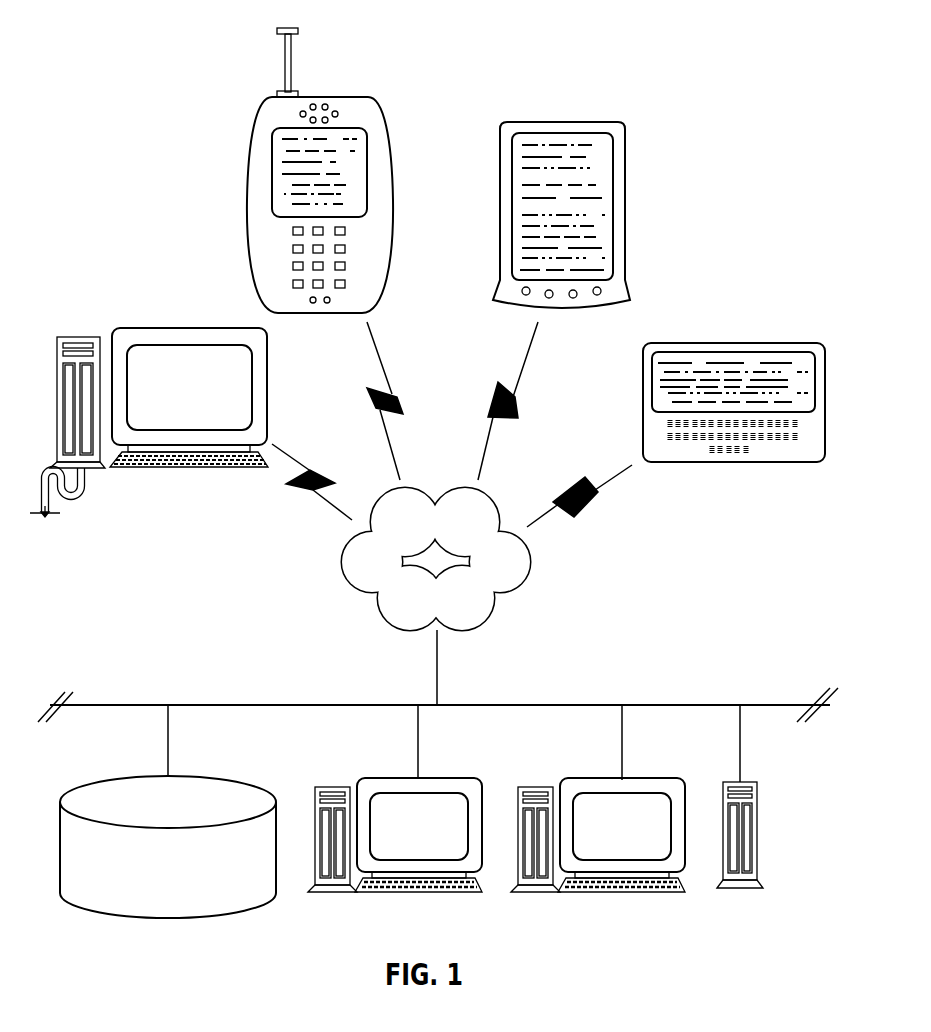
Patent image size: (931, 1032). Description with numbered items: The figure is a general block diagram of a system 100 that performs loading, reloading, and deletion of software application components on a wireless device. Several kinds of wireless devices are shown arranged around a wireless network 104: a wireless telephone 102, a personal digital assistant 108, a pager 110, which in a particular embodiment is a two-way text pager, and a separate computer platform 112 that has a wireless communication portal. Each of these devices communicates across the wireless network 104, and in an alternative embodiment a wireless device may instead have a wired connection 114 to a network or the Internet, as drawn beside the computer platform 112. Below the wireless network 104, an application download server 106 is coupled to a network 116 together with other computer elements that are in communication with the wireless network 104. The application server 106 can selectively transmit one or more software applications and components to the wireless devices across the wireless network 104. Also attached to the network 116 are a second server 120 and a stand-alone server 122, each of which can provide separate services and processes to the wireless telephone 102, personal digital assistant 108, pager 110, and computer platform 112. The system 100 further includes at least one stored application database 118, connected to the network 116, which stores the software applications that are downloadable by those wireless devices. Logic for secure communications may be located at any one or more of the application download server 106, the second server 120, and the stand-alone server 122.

The system 100 is at (135, 133).
The wireless telephone 102 is at (373, 126).
The wireless network 104 is at (530, 560).
The application server 106 is at (397, 778).
The personal digital assistant 108 is at (567, 122).
The pager 110 is at (762, 463).
The computer platform 112 is at (180, 328).
The wired connection 114 is at (88, 495).
The network 116 is at (655, 705).
The stored application database 118 is at (172, 918).
The second server 120 is at (603, 780).
The stand-alone server 122 is at (758, 812).